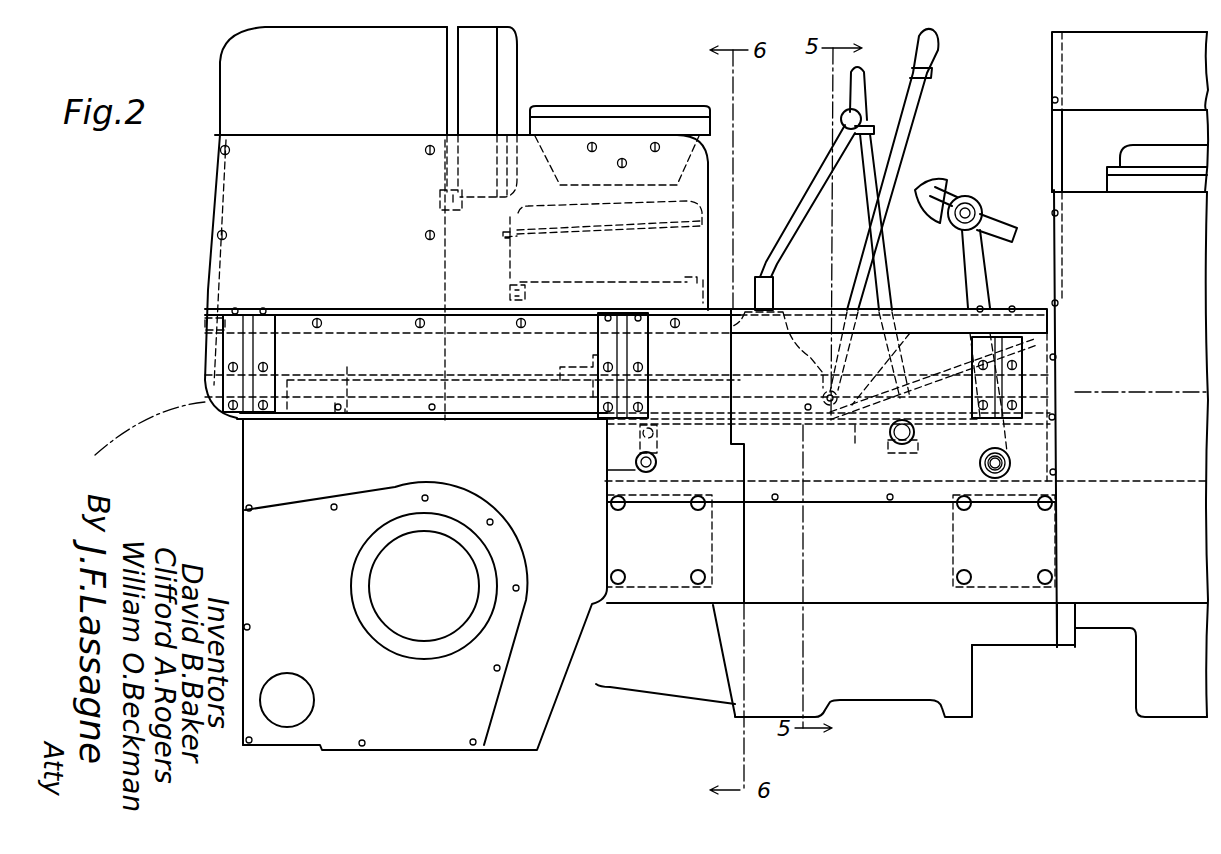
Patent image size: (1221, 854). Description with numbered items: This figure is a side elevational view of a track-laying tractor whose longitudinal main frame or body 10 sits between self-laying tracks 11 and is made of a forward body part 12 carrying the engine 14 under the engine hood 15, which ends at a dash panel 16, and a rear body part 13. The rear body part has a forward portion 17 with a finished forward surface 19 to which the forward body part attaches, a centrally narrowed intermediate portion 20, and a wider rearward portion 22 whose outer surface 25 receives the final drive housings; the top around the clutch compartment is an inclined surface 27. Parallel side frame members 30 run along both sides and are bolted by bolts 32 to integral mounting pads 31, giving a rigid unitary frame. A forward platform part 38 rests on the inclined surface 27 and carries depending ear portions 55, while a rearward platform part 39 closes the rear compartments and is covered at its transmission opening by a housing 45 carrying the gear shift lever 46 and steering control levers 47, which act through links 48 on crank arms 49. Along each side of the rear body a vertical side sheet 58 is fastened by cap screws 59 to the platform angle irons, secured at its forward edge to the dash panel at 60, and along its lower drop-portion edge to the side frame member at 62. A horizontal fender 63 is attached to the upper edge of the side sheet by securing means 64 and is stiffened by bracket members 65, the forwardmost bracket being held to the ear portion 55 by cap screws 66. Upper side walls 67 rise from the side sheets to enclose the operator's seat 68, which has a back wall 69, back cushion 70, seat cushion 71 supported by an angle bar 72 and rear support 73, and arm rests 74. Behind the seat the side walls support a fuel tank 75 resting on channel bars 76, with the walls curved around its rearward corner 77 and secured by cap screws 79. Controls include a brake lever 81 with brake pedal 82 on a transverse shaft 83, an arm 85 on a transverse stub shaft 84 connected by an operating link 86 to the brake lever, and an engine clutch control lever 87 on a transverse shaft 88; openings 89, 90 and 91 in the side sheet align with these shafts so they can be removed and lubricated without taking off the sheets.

The main frame or body 10 is at (381, 760).
The self-laying tracks 11 is at (134, 430).
The forward body part 12 is at (1137, 622).
The rear body part 13 is at (603, 690).
The engine 14 is at (1125, 158).
The engine hood 15 is at (1080, 72).
The dash panel 16 is at (1053, 137).
The forward portion of rear body part 17 is at (1004, 645).
The finished forward vertical surface 19 is at (1058, 648).
The intermediate portion of rear body part 20 is at (712, 692).
The rearward portion of rear body part 22 is at (277, 468).
The outer surface 25 is at (448, 745).
The inclined surface 27 is at (910, 333).
The side frame members 30 is at (878, 603).
The mounting pads 31 is at (625, 545).
The bolts 32 is at (622, 510).
The forward platform part 38 is at (884, 360).
The rearward platform part 39 is at (490, 422).
The housing 45 is at (800, 310).
The gear shift lever 46 is at (803, 205).
The steering control levers 47 is at (930, 58).
The links 48 is at (764, 410).
The crank arms 49 is at (346, 372).
The depending ear portion 55 is at (1028, 392).
The side sheet 58 is at (1037, 380).
The cap screws 59 is at (340, 410).
The forward securing point 60 is at (1060, 354).
The lower edge securing point 62 is at (890, 500).
The fender 63 is at (337, 310).
The securing means 64 is at (418, 320).
The bracket members 65 is at (268, 348).
The cap screws 66 is at (970, 356).
The side walls 67 is at (702, 167).
The operator's seat 68 is at (616, 107).
The back wall 69 is at (452, 86).
The back cushion 70 is at (515, 58).
The seat cushion 71 is at (710, 233).
The angle bar 72 is at (699, 288).
The rear seat support 73 is at (527, 291).
The arm rests 74 is at (694, 117).
The fuel tank 75 is at (242, 64).
The channel bars 76 is at (386, 380).
The rearward corner 77 is at (214, 176).
The cap screws 79 is at (226, 233).
The brake lever 81 is at (970, 263).
The brake pedal 82 is at (945, 193).
The transverse shaft 83 is at (1012, 460).
The transverse stub shaft 84 is at (657, 462).
The arm 85 is at (640, 450).
The operating link 86 is at (860, 436).
The engine clutch control lever 87 is at (858, 105).
The transverse shaft 88 is at (915, 436).
The opening 89 is at (1005, 469).
The opening 90 is at (893, 452).
The openings 91 is at (625, 466).